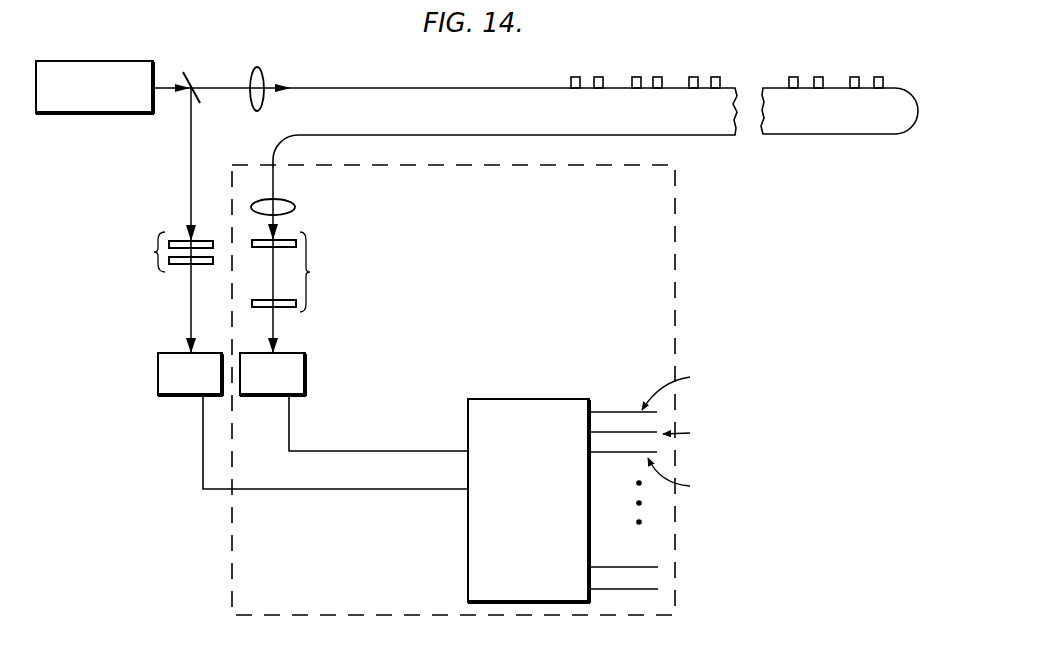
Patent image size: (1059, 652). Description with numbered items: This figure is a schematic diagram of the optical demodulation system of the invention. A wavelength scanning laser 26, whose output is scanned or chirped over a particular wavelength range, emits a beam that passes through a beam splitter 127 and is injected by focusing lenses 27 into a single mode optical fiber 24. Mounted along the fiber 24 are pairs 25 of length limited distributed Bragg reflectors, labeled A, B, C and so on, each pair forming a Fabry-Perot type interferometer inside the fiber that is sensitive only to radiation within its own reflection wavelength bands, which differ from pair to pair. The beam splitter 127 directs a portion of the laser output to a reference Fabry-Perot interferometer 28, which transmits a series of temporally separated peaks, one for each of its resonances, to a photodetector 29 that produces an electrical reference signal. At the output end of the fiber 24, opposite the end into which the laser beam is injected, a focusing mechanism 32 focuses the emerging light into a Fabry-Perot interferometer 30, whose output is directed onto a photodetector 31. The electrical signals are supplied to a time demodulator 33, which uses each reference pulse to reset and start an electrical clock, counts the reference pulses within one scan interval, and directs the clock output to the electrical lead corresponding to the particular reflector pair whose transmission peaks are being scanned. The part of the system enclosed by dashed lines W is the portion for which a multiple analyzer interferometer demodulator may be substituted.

The optical fiber 24 is at (338, 86).
The pairs of length limited distributed Bragg reflectors 25 is at (587, 77).
The wavelength scanning laser 26 is at (110, 60).
The beam splitter 127 is at (198, 73).
The focusing lenses 27 is at (250, 102).
The reference Fabry-Perot interferometer 28 is at (148, 268).
The photodetector 29 is at (155, 364).
The Fabry-Perot interferometer 30 is at (313, 286).
The photodetector 31 is at (310, 377).
The focusing mechanism 32 is at (302, 212).
The time demodulator 33 is at (522, 395).
The dashed-line enclosed part of the optical demodulation system W is at (679, 304).